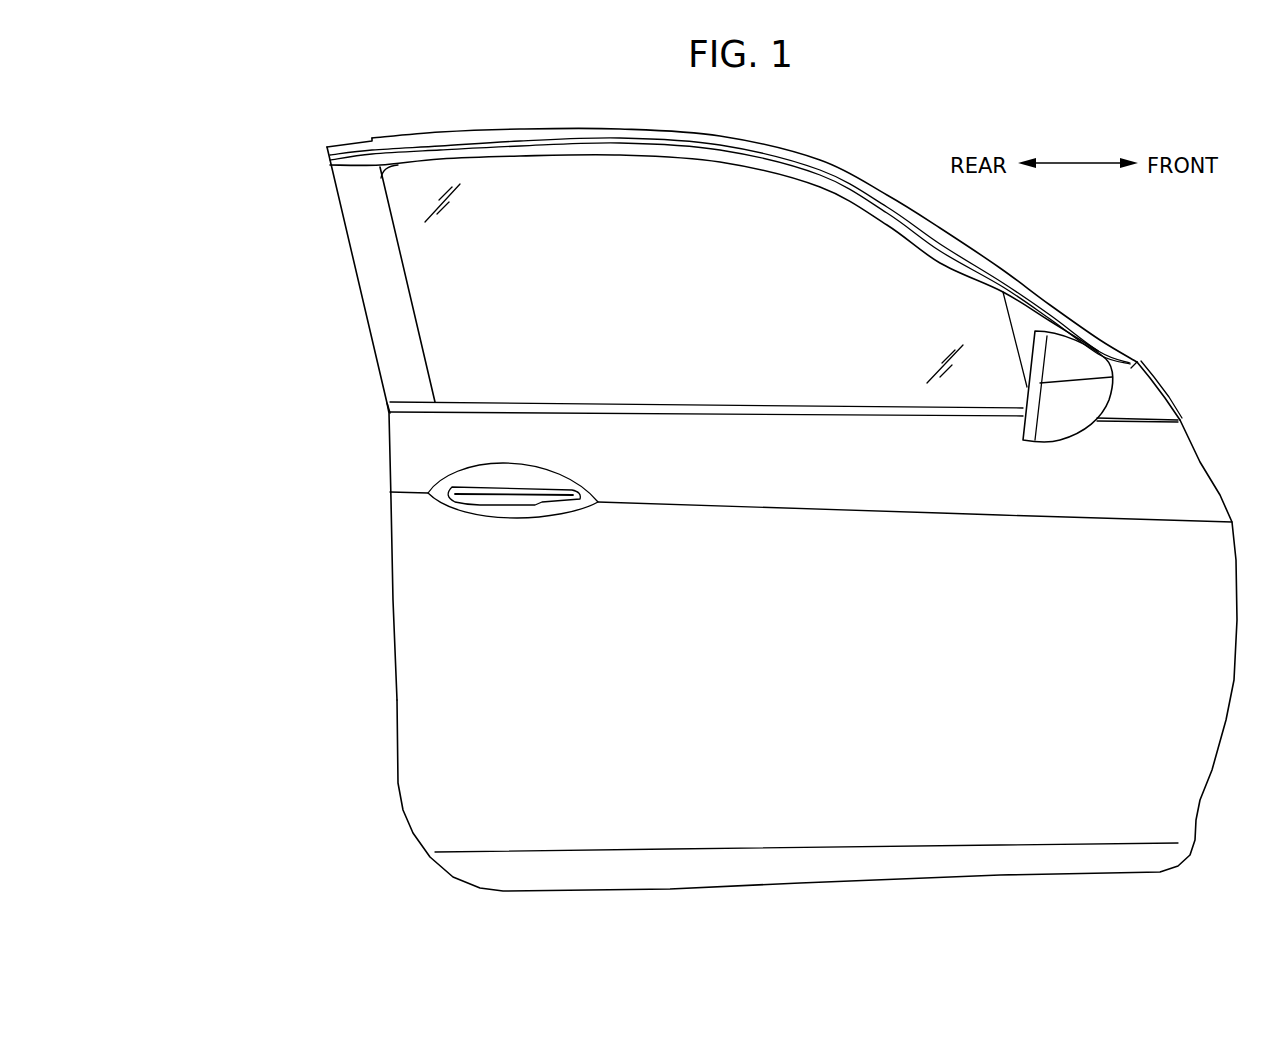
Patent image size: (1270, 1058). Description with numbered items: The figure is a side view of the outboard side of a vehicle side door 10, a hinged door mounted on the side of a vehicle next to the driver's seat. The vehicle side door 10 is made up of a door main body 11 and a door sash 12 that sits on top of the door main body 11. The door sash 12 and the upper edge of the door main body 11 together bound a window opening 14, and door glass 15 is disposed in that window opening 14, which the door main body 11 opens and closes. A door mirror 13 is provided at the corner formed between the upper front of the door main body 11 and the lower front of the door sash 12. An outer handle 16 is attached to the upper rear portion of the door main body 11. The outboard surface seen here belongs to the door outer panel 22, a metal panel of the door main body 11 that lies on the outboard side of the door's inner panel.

The vehicle side door 10 is at (252, 262).
The door main body 11 is at (380, 622).
The door sash 12 is at (328, 208).
The door mirror 13 is at (1108, 399).
The window opening 14 is at (418, 320).
The door glass 15 is at (770, 203).
The outer handle 16 is at (508, 505).
The door outer panel 22 is at (398, 725).